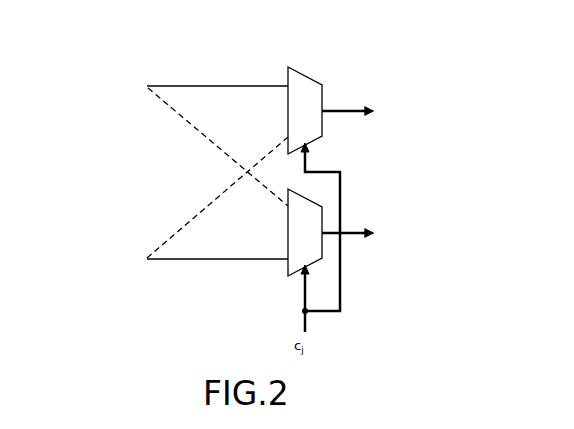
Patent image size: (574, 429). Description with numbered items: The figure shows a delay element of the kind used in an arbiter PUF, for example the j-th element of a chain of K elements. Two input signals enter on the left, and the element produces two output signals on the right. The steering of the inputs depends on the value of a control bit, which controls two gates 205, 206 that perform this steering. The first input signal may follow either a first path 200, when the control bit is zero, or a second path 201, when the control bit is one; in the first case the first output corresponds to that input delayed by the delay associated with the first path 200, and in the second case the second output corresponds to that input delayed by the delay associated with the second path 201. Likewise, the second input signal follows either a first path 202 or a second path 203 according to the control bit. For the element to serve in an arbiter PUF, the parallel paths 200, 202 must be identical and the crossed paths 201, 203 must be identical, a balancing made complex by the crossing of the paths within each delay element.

The first path 200 is at (180, 86).
The second path 201 is at (178, 108).
The first path 202 is at (178, 260).
The second path 203 is at (168, 241).
The gate 205 is at (323, 96).
The gate 206 is at (288, 265).